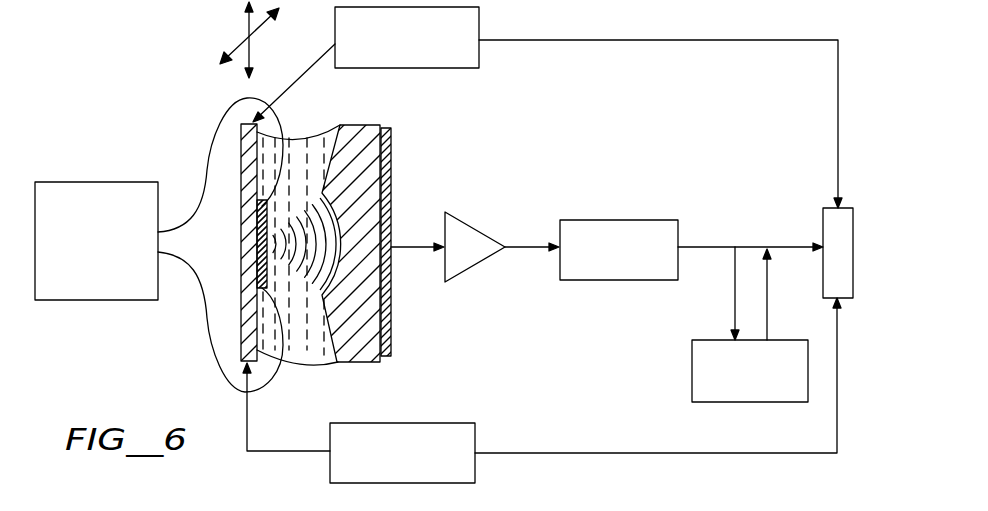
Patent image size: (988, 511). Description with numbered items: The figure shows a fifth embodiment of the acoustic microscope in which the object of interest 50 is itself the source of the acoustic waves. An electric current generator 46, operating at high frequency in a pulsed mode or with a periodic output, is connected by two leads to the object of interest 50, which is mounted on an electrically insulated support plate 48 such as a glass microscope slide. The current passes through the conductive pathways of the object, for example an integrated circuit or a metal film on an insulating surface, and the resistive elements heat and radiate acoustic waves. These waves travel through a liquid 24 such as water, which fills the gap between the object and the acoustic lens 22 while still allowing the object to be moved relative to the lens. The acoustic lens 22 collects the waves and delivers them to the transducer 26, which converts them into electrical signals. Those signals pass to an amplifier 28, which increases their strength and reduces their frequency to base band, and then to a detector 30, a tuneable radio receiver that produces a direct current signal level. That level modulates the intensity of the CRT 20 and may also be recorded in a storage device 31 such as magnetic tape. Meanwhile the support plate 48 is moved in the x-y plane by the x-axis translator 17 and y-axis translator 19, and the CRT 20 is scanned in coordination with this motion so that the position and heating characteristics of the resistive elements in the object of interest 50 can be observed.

The x-axis translator 17 is at (476, 437).
The y-axis translator 19 is at (479, 57).
The CRT 20 is at (823, 207).
The acoustic lens 22 is at (358, 125).
The liquid 24 is at (308, 353).
The transducer 26 is at (391, 162).
The amplifier 28 is at (480, 264).
The detector 30 is at (628, 220).
The storage device 31 is at (692, 372).
The electric current generator 46 is at (107, 182).
The support plate 48 is at (248, 322).
The object of interest 50 is at (248, 229).